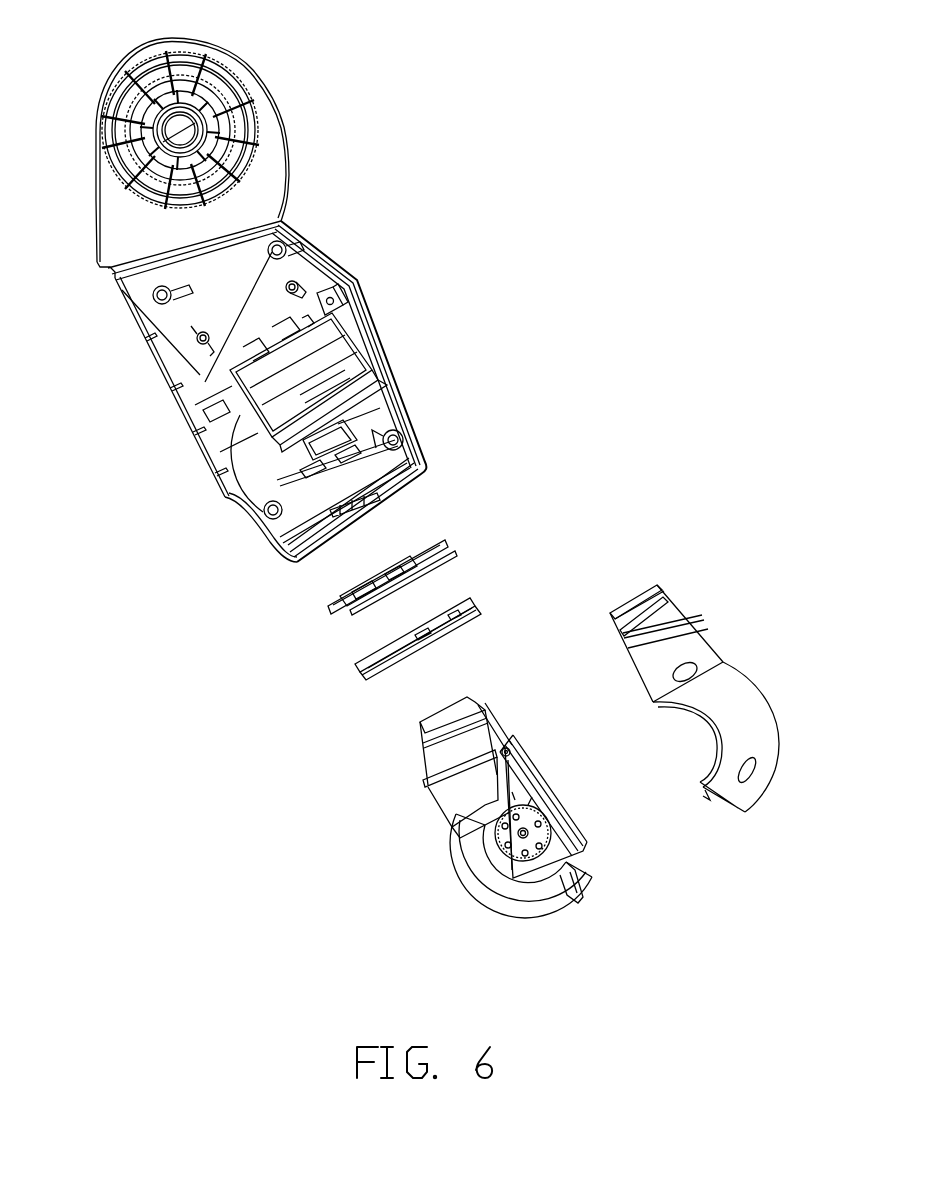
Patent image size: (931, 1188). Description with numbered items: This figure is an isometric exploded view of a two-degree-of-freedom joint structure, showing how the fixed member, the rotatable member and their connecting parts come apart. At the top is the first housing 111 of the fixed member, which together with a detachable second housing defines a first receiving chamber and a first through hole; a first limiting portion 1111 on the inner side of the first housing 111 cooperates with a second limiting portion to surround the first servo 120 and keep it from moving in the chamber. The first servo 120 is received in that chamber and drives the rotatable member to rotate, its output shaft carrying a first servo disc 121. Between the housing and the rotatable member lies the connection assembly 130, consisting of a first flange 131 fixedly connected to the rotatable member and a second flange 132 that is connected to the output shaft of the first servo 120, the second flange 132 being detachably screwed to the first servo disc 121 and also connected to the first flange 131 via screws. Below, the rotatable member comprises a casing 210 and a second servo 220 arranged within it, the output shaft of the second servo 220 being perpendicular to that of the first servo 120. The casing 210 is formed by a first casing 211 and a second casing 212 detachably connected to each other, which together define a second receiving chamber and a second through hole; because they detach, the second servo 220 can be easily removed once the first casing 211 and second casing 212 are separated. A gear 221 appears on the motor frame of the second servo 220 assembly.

The first housing 111 is at (323, 270).
The first limiting portion 1111 is at (343, 310).
The first servo 120 is at (350, 363).
The first servo disc 121 is at (382, 437).
The connection assembly 130 is at (470, 592).
The first flange 131 is at (450, 637).
The second flange 132 is at (443, 543).
The casing 210 is at (614, 823).
The first casing 211 is at (545, 907).
The second casing 212 is at (694, 784).
The second servo 220 is at (533, 773).
The gear 221 is at (547, 833).